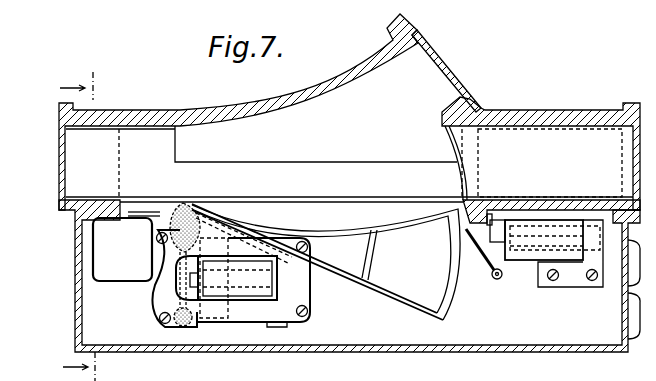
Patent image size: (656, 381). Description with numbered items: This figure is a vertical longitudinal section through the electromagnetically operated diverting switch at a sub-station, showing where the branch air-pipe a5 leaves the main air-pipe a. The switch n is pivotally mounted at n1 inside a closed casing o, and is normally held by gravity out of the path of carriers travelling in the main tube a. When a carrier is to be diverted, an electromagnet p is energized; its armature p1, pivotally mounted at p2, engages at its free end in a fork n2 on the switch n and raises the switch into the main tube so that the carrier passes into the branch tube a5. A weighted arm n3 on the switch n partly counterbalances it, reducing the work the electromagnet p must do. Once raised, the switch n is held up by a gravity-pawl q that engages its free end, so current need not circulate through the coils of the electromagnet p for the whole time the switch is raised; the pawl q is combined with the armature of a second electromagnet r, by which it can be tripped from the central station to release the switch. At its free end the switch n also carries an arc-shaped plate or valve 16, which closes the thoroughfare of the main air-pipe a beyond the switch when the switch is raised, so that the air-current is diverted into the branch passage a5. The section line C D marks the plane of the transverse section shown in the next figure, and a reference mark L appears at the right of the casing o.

The main air-pipe a is at (581, 116).
The branch air-pipe a5 is at (416, 70).
The switch n is at (410, 221).
The pivot of switch n1 is at (186, 206).
The fork n2 is at (213, 199).
The weighted arm n3 is at (122, 249).
The electromagnet p is at (238, 290).
The armature p1 is at (174, 289).
The armature pivot p2 is at (182, 333).
The gravity-pawl q is at (483, 267).
The electromagnet r is at (527, 252).
The closed casing o is at (491, 347).
The arc-shaped plate or valve 16 is at (445, 313).
The section line C D C is at (76, 83).
The section line C D is at (79, 366).
The latch knob L is at (632, 305).